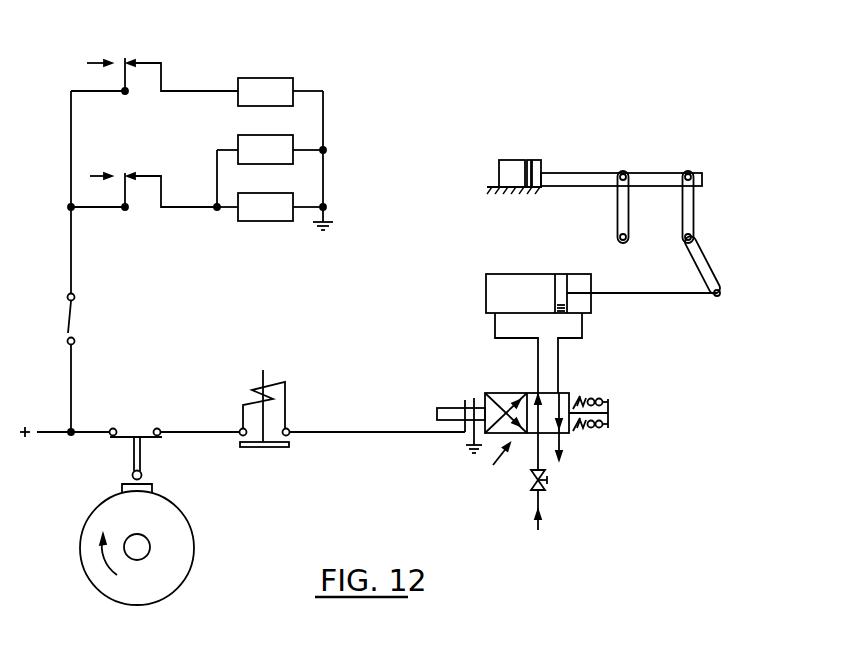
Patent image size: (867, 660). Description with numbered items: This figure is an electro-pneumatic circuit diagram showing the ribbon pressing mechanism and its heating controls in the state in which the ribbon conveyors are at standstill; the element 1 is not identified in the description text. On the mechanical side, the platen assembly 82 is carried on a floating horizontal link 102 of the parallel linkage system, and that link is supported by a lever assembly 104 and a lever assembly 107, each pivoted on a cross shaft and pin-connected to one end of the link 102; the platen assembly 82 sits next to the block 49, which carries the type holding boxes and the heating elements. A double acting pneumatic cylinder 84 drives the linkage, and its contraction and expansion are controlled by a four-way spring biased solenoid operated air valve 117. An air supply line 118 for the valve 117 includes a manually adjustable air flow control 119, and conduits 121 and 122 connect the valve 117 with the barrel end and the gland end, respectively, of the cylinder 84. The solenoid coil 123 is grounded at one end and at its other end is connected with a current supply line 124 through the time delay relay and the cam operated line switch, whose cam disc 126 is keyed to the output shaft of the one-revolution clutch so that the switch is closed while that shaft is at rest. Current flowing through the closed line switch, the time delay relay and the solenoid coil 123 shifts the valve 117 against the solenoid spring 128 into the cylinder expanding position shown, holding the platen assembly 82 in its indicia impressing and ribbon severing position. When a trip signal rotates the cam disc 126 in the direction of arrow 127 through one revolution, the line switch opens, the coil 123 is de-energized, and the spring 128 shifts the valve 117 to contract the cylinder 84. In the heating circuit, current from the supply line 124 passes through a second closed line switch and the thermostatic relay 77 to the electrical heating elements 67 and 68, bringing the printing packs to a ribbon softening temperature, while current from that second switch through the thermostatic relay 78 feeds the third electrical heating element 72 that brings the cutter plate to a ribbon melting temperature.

The workpiece 1 is at (531, 160).
The block 49 is at (513, 160).
The electrical heating element 67 is at (279, 145).
The electrical heating element 68 is at (279, 202).
The third electrical heating element 72 is at (273, 78).
The thermostatic relay 77 is at (136, 176).
The thermostatic relay 78 is at (143, 63).
The platen assembly 82 is at (540, 172).
The double acting pneumatic cylinder 84 is at (522, 273).
The floating horizontal link 102 is at (672, 173).
The lever assembly 104 is at (700, 257).
The lever assembly 107 is at (622, 207).
The four-way spring biased solenoid operated air valve 117 is at (494, 466).
The air supply line 118 is at (536, 524).
The manually adjustable air flow control 119 is at (545, 486).
The conduit 121 is at (495, 323).
The conduit 122 is at (582, 330).
The solenoid coil 123 is at (477, 399).
The current supply line 124 is at (50, 436).
The cam disc 126 is at (186, 538).
The arrow 127 is at (105, 561).
The solenoid spring 128 is at (590, 400).